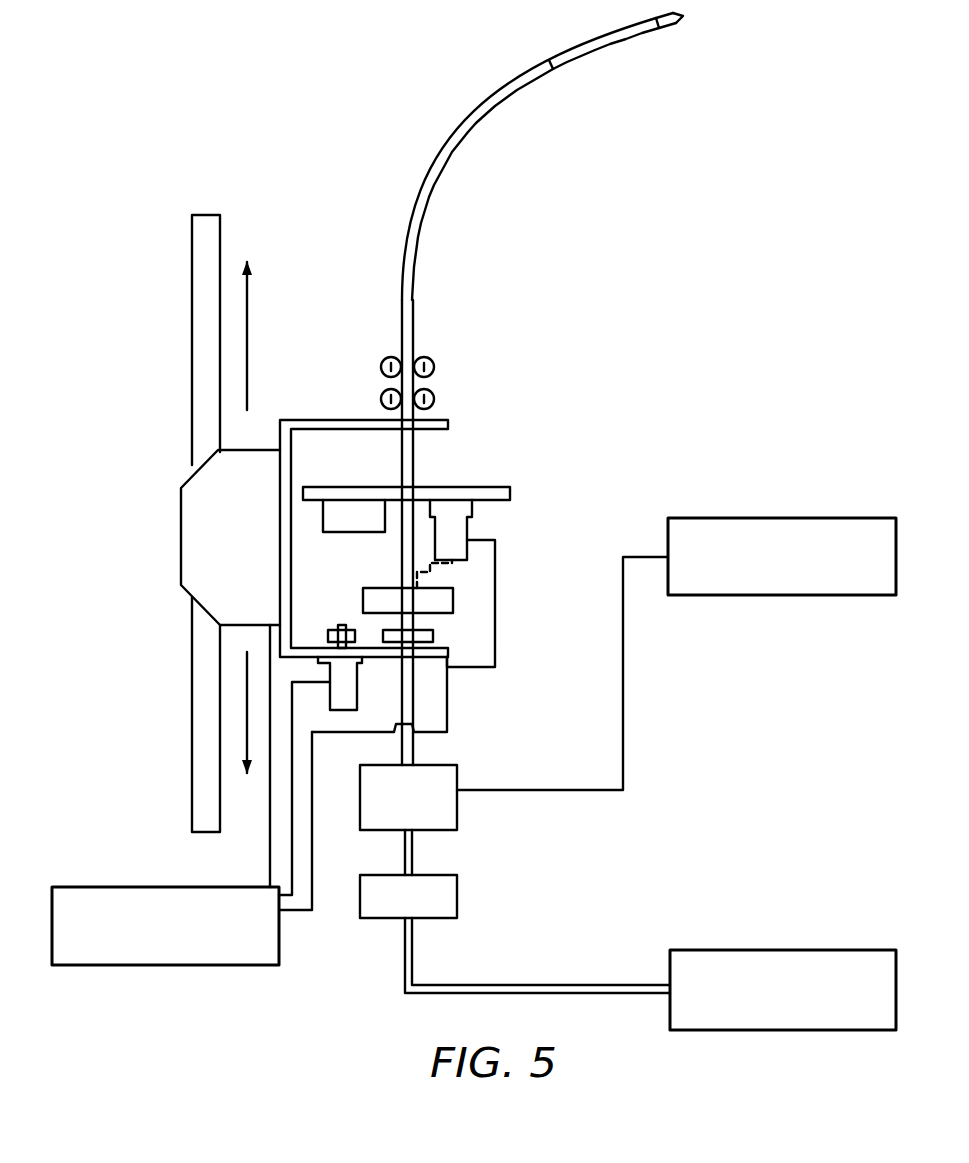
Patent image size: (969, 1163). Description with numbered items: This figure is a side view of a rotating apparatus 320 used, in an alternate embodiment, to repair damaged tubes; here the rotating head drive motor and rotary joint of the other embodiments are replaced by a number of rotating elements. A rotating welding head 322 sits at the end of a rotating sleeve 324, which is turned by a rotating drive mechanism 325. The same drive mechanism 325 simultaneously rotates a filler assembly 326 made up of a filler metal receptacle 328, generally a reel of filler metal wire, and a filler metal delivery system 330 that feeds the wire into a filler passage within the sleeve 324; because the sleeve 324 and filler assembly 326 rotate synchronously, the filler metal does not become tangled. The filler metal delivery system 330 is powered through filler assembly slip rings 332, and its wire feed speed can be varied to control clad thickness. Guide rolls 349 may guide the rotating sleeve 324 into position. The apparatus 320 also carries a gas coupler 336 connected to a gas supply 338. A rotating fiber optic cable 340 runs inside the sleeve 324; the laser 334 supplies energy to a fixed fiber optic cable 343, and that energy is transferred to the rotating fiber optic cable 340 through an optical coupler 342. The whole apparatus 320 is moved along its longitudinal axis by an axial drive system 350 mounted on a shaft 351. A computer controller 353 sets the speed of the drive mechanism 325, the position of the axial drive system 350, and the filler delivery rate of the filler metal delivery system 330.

The rotating apparatus 320 is at (337, 138).
The rotating welding head 322 is at (668, 27).
The rotating sleeve 324 is at (430, 220).
The rotating drive mechanism 325 is at (357, 690).
The filler assembly 326 is at (462, 447).
The filler metal receptacle 328 is at (367, 514).
The filler metal delivery system 330 is at (477, 537).
The filler assembly slip rings 332 is at (453, 602).
The laser 334 is at (838, 950).
The gas coupler 336 is at (458, 773).
The gas supply 338 is at (792, 518).
The rotating fiber optic cable 340 is at (413, 858).
The optical coupler 342 is at (458, 897).
The fixed fiber optic cable 343 is at (415, 933).
The guide rolls 349 is at (380, 380).
The axial drive system 350 is at (217, 498).
The shaft 351 is at (192, 697).
The computer controller 353 is at (128, 887).